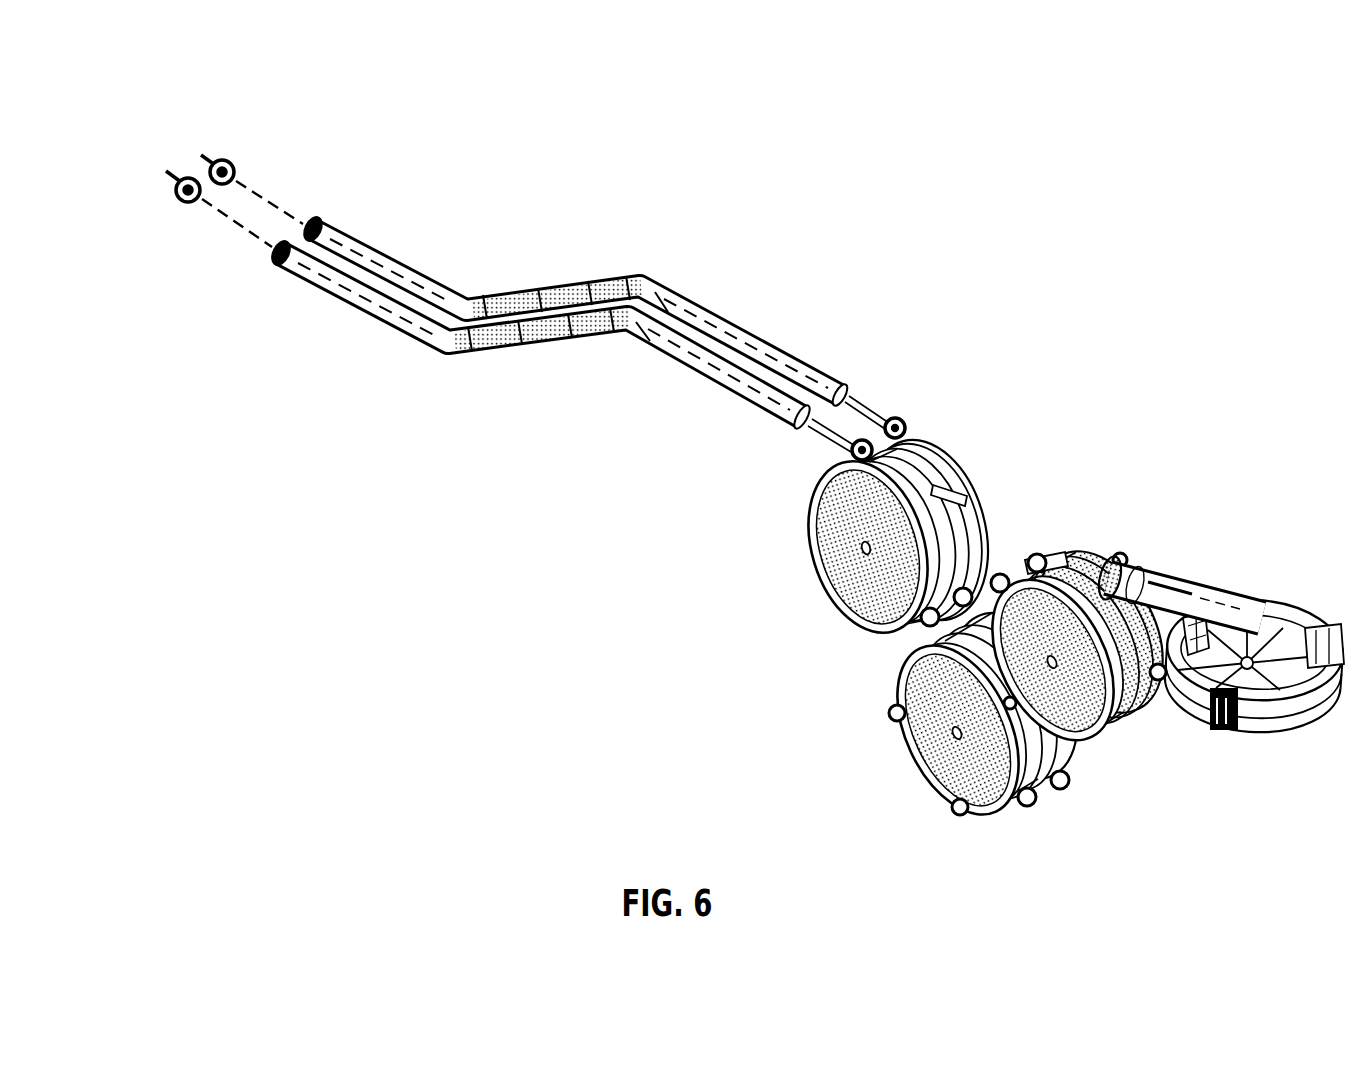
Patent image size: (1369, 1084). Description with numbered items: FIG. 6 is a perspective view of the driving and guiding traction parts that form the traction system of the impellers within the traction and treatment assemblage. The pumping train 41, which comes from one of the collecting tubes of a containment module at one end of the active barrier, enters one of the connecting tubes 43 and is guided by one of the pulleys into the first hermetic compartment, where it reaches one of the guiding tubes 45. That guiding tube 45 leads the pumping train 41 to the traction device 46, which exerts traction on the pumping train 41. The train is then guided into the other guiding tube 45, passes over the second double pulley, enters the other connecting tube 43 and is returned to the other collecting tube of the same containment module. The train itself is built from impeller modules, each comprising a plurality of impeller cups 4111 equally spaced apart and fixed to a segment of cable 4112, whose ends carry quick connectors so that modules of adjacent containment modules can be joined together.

The pumping train 41 is at (186, 238).
The connecting tube 43 is at (457, 297).
The impeller cup 4111 is at (912, 424).
The segment of cable 4112 is at (855, 409).
The guiding tube 45 is at (1157, 560).
The traction device 46 is at (1291, 600).